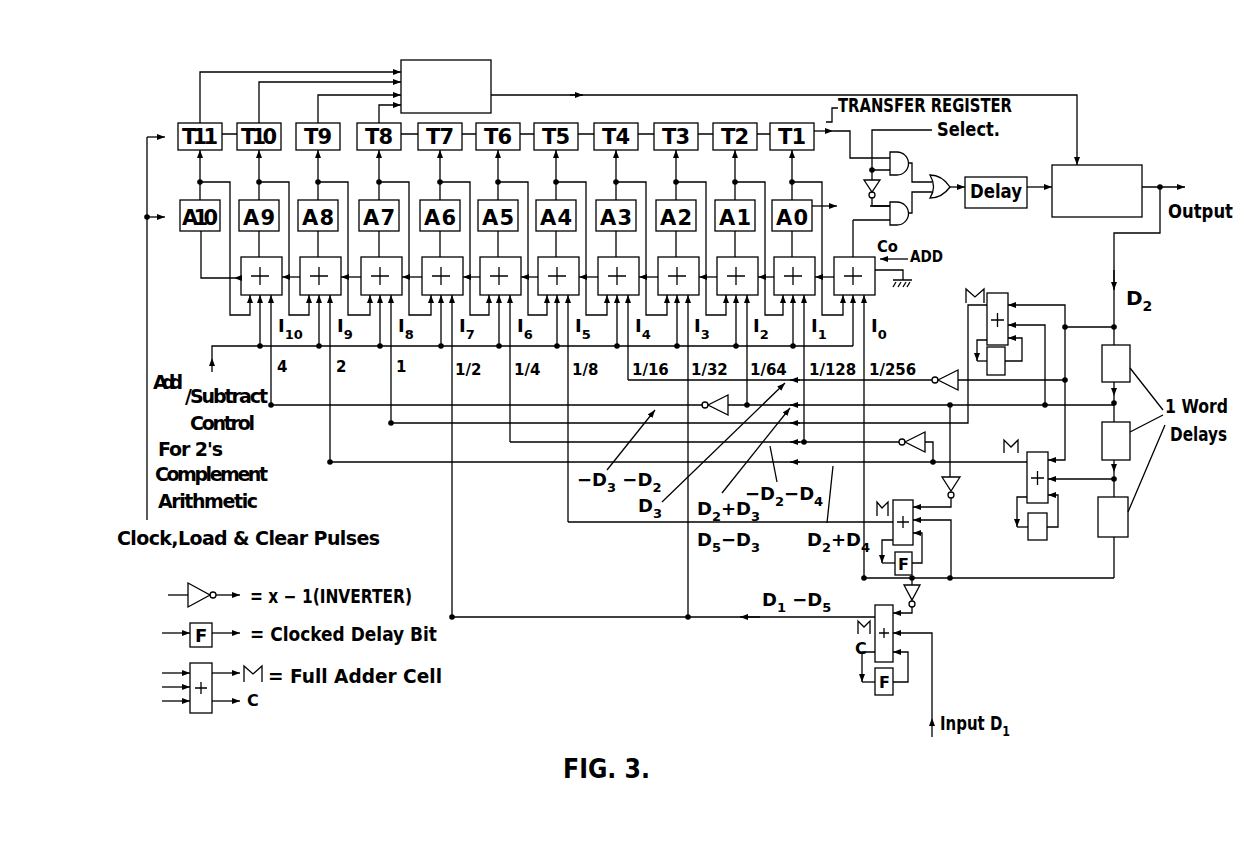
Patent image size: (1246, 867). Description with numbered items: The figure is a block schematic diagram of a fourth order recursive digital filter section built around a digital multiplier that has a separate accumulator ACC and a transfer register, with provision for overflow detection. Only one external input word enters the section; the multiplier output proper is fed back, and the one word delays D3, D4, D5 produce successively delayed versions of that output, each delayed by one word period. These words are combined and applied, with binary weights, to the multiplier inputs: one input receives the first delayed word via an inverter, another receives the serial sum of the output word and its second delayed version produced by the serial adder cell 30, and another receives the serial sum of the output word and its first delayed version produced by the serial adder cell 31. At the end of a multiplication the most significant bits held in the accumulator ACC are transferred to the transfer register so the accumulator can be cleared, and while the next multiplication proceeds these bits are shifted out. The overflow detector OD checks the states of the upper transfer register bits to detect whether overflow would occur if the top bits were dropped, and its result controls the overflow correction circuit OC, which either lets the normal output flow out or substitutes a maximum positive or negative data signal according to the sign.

The serial adder cell 30 is at (1033, 452).
The serial adder cell 31 is at (996, 293).
The overflow detector OD is at (491, 74).
The overflow correction circuit OC is at (1115, 165).
The accumulator ACC is at (841, 206).
The one word delay D3 is at (1117, 363).
The one word delay D4 is at (1118, 441).
The one word delay D5 is at (1114, 517).